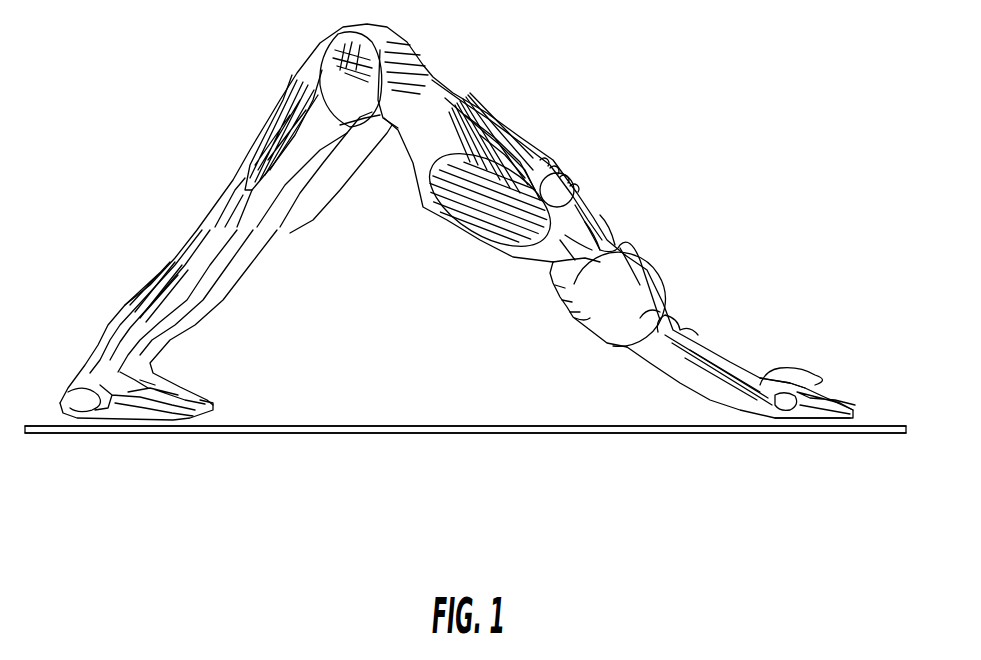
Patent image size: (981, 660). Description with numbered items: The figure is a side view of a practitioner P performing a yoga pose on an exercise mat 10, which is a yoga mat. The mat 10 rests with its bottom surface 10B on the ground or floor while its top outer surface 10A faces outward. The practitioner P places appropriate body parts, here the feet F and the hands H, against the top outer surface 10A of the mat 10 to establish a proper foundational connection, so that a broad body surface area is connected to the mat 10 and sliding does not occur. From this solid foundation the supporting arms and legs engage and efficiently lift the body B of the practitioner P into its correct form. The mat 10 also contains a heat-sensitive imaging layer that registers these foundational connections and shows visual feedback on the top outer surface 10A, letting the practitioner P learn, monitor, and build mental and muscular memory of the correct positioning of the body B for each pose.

The exercise mat 10 is at (433, 435).
The top outer surface 10A is at (498, 425).
The bottom surface 10B is at (520, 435).
The practitioner P is at (473, 222).
The body B is at (487, 120).
The feet F is at (170, 403).
The hands H is at (817, 393).